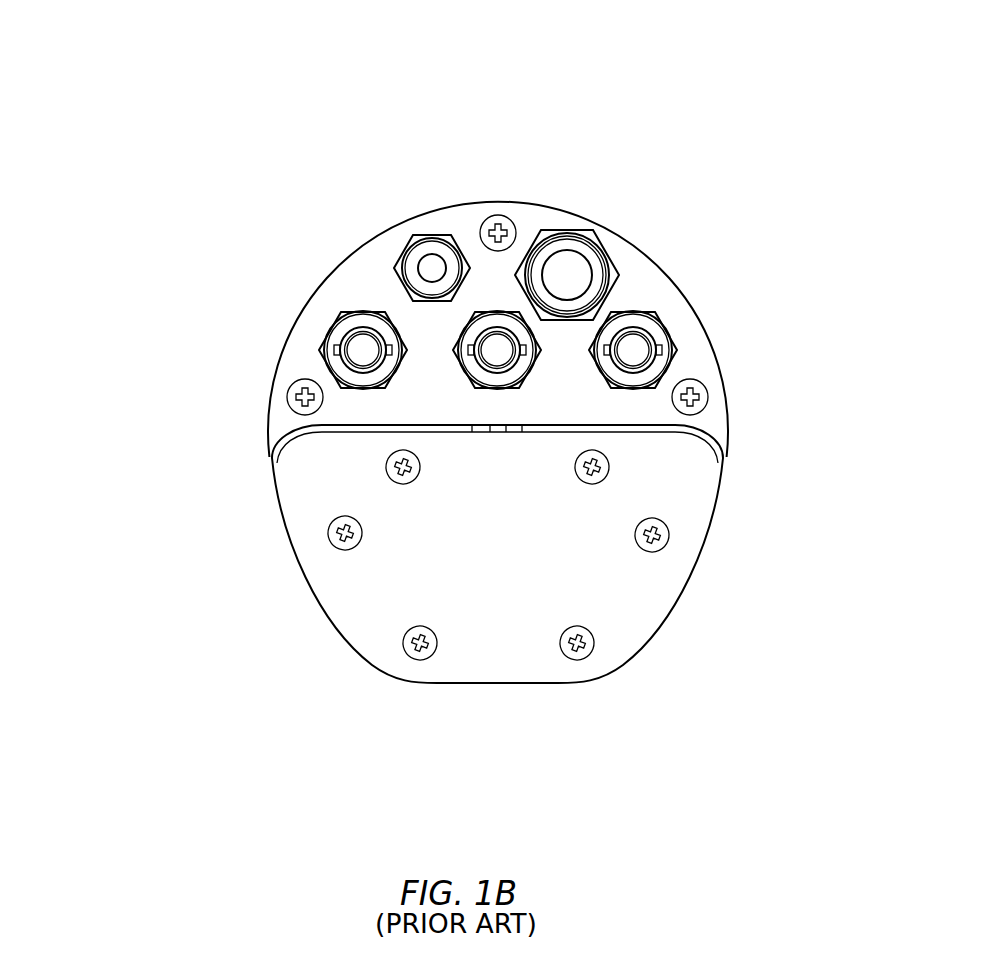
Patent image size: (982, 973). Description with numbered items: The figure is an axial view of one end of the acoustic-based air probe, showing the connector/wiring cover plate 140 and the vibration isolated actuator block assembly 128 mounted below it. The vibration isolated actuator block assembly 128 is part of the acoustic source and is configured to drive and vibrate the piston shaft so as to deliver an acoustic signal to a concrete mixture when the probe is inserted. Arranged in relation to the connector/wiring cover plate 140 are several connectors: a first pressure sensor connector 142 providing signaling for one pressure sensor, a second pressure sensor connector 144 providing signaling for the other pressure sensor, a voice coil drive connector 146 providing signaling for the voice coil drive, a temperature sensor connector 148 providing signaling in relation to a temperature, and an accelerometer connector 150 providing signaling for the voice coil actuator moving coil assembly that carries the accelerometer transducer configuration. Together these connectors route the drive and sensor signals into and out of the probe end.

The vibration isolated actuator block assembly 128 is at (365, 575).
The connector/wiring cover plate 140 is at (295, 360).
The pressure sensor no. 1 connector 142 is at (345, 338).
The pressure sensor no. 2 connector 144 is at (495, 337).
The voice coil drive connector 146 is at (407, 243).
The temperature sensor connector 148 is at (553, 235).
The accelerometer connector 150 is at (653, 337).